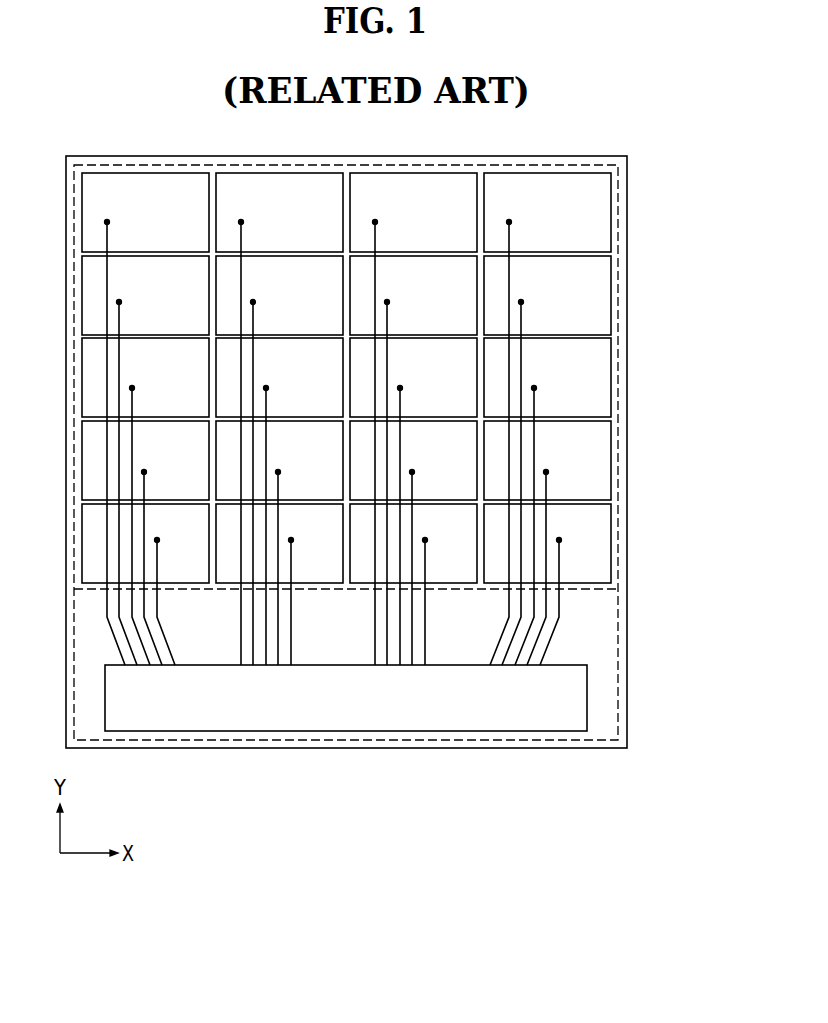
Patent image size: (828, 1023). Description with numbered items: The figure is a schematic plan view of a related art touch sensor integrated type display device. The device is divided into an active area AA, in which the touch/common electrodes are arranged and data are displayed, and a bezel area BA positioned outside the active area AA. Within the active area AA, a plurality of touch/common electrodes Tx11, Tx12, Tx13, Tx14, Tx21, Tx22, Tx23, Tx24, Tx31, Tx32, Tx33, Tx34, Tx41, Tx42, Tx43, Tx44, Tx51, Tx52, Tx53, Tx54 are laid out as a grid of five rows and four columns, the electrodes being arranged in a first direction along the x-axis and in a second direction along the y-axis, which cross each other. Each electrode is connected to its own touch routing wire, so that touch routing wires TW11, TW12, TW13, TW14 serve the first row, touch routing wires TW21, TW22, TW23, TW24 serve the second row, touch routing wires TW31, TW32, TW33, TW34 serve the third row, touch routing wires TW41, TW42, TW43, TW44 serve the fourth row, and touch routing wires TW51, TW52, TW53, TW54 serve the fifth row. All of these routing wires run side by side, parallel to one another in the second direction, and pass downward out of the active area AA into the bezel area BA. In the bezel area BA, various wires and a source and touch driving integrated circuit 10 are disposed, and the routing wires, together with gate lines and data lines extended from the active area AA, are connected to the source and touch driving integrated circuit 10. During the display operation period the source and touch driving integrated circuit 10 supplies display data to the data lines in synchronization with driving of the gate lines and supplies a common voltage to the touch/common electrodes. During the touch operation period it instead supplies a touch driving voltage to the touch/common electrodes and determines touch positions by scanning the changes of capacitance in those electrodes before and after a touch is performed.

The source and touch driving integrated circuit 10 is at (376, 487).
The active area AA is at (384, 419).
The bezel area BA is at (620, 640).
The touch/common electrode Tx11 is at (145, 212).
The touch/common electrode Tx12 is at (279, 212).
The touch/common electrode Tx13 is at (413, 212).
The touch/common electrode Tx14 is at (547, 212).
The touch/common electrode Tx21 is at (145, 295).
The touch/common electrode Tx22 is at (279, 295).
The touch/common electrode Tx23 is at (413, 295).
The touch/common electrode Tx24 is at (547, 295).
The touch/common electrode Tx31 is at (145, 377).
The touch/common electrode Tx32 is at (279, 377).
The touch/common electrode Tx33 is at (413, 377).
The touch/common electrode Tx34 is at (547, 377).
The touch/common electrode Tx41 is at (145, 460).
The touch/common electrode Tx42 is at (279, 460).
The touch/common electrode Tx43 is at (413, 460).
The touch/common electrode Tx44 is at (547, 460).
The touch/common electrode Tx51 is at (145, 543).
The touch/common electrode Tx52 is at (279, 543).
The touch/common electrode Tx53 is at (413, 543).
The touch/common electrode Tx54 is at (547, 543).
The touch routing wire TW11 is at (110, 233).
The touch routing wire TW12 is at (244, 233).
The touch routing wire TW13 is at (378, 233).
The touch routing wire TW14 is at (512, 233).
The touch routing wire TW21 is at (122, 311).
The touch routing wire TW22 is at (256, 311).
The touch routing wire TW23 is at (390, 311).
The touch routing wire TW24 is at (524, 311).
The touch routing wire TW31 is at (135, 400).
The touch routing wire TW32 is at (269, 400).
The touch routing wire TW33 is at (403, 400).
The touch routing wire TW34 is at (537, 400).
The touch routing wire TW41 is at (147, 483).
The touch routing wire TW42 is at (281, 483).
The touch routing wire TW43 is at (415, 483).
The touch routing wire TW44 is at (549, 483).
The touch routing wire TW51 is at (157, 575).
The touch routing wire TW52 is at (315, 566).
The touch routing wire TW53 is at (449, 566).
The touch routing wire TW54 is at (583, 566).